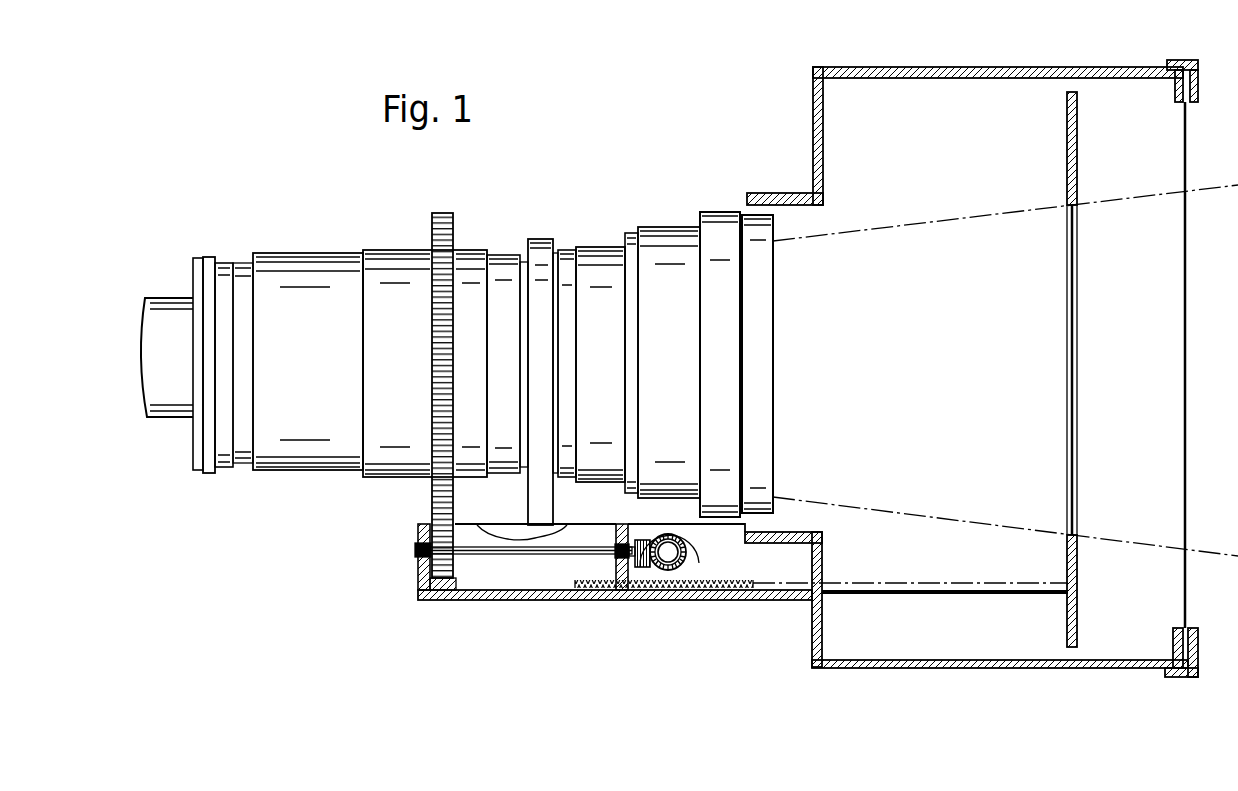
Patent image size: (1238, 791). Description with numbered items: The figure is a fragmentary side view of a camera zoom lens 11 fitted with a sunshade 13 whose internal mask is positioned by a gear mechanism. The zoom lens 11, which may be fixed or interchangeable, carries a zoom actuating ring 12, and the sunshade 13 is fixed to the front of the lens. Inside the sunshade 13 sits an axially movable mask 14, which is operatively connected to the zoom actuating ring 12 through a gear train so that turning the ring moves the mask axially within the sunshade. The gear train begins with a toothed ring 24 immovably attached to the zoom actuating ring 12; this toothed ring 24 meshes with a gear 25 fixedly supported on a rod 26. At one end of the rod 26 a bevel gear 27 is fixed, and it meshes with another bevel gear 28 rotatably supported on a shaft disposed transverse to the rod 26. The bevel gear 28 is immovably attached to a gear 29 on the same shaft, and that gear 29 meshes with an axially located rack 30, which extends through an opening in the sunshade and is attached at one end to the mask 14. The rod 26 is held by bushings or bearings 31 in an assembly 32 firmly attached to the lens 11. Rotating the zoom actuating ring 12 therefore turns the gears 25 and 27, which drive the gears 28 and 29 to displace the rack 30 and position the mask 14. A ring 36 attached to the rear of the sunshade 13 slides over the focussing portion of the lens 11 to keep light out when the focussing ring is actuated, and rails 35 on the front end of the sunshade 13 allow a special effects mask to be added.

The zoom lens 11 is at (595, 238).
The zoom actuating ring 12 is at (392, 249).
The sunshade 13 is at (903, 669).
The axially movable mask 14 is at (1067, 618).
The toothed ring 24 is at (443, 212).
The gear 25 is at (456, 580).
The rod 26 is at (514, 556).
The bevel gear 27 is at (640, 568).
The bevel gear 28 is at (688, 548).
The gear 29 is at (694, 566).
The rack 30 is at (790, 601).
The bearings 31 is at (416, 541).
The assembly 32 is at (418, 583).
The rails 35 is at (1197, 668).
The ring 36 is at (763, 193).